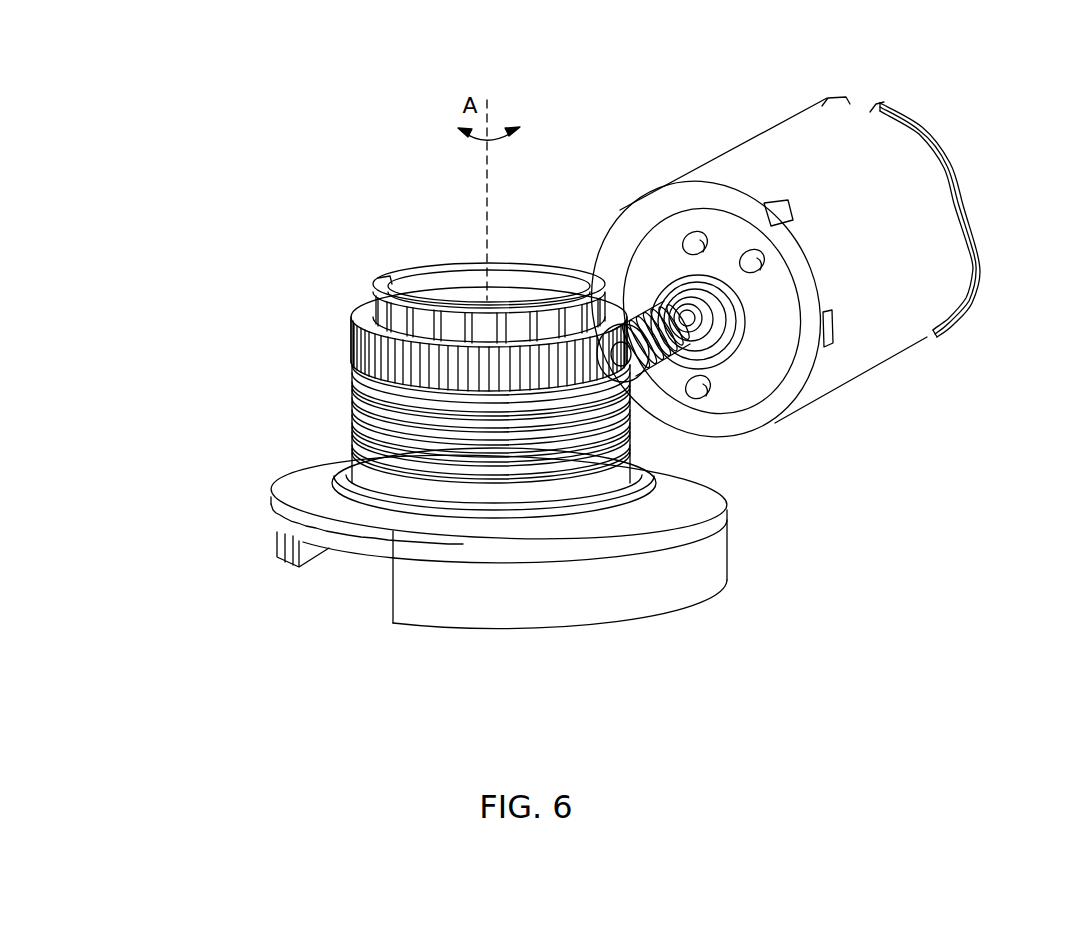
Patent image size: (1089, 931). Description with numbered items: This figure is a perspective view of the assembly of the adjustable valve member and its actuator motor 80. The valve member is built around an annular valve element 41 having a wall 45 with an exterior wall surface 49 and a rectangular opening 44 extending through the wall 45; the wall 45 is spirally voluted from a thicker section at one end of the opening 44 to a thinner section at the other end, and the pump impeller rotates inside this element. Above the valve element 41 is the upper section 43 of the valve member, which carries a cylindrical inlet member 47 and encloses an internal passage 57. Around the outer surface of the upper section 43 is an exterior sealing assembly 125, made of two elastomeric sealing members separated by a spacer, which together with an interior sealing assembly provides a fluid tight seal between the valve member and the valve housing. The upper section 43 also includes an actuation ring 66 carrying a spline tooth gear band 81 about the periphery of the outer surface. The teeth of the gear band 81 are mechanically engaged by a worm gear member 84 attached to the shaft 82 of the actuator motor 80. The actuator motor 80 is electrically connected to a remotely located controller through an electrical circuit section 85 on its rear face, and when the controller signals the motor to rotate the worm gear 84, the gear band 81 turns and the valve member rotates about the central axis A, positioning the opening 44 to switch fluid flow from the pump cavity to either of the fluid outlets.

The actuator motor 80 is at (783, 144).
The electrical circuit section 85 is at (955, 162).
The motor shaft 82 is at (690, 338).
The worm gear member 84 is at (657, 368).
The upper section 43 is at (567, 262).
The cylindrical inlet member 47 is at (380, 292).
The internal passage 57 is at (428, 297).
The spline tooth gear band 81 is at (356, 347).
The actuation ring 66 is at (375, 386).
The exterior sealing assembly 125 is at (322, 432).
The annular valve element 41 is at (712, 511).
The rectangular opening 44 is at (352, 595).
The exterior wall surface 49 is at (632, 593).
The wall 45 is at (550, 628).